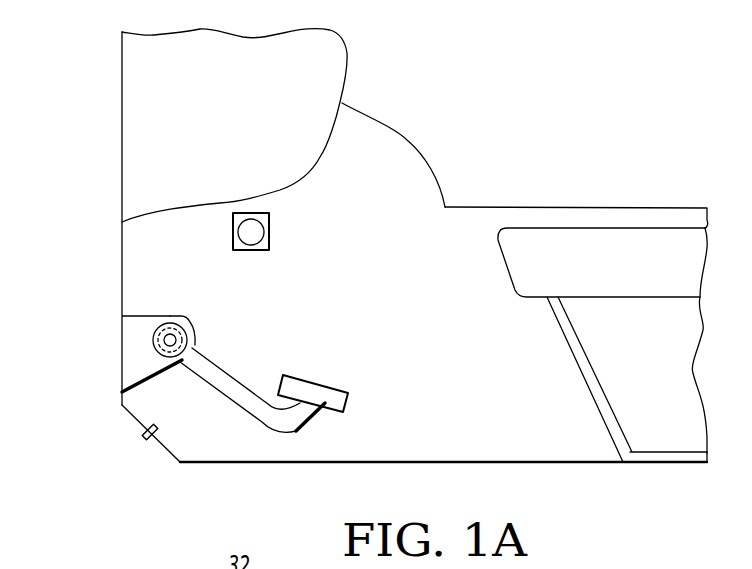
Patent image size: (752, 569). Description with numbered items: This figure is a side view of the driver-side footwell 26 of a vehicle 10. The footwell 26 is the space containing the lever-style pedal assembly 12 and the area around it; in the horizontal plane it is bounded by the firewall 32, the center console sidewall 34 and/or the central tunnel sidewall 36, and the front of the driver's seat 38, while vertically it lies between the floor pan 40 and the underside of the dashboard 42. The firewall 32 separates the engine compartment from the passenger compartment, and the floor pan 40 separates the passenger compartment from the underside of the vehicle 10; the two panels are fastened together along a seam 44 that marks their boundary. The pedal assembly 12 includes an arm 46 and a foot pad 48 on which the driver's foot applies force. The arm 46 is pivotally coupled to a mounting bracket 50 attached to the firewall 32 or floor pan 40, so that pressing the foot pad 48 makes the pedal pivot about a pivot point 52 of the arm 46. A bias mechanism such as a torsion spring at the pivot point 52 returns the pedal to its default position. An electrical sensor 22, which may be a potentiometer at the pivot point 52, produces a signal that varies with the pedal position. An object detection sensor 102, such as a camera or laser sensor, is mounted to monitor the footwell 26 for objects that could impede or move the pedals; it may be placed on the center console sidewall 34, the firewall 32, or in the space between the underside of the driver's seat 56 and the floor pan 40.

The vehicle 10 is at (585, 72).
The pedal assembly 12 is at (220, 372).
The electrical sensor 22 is at (170, 320).
The driver-side footwell 26 is at (360, 310).
The firewall 32 is at (117, 250).
The center console sidewall 34 is at (407, 140).
The central tunnel sidewall 36 is at (568, 207).
The driver's seat 38 is at (502, 262).
The floor pan 40 is at (407, 462).
The dashboard 42 is at (300, 180).
The seam 44 is at (143, 438).
The arm 46 is at (310, 433).
The foot pad 48 is at (315, 380).
The mounting bracket 50 is at (195, 330).
The pivot point 52 is at (150, 347).
The underside of the driver's seat 56 is at (603, 297).
The object detection sensor 102 is at (248, 214).